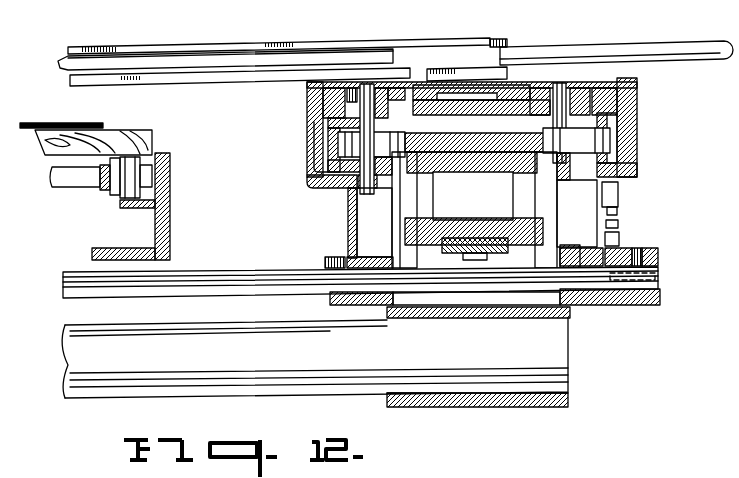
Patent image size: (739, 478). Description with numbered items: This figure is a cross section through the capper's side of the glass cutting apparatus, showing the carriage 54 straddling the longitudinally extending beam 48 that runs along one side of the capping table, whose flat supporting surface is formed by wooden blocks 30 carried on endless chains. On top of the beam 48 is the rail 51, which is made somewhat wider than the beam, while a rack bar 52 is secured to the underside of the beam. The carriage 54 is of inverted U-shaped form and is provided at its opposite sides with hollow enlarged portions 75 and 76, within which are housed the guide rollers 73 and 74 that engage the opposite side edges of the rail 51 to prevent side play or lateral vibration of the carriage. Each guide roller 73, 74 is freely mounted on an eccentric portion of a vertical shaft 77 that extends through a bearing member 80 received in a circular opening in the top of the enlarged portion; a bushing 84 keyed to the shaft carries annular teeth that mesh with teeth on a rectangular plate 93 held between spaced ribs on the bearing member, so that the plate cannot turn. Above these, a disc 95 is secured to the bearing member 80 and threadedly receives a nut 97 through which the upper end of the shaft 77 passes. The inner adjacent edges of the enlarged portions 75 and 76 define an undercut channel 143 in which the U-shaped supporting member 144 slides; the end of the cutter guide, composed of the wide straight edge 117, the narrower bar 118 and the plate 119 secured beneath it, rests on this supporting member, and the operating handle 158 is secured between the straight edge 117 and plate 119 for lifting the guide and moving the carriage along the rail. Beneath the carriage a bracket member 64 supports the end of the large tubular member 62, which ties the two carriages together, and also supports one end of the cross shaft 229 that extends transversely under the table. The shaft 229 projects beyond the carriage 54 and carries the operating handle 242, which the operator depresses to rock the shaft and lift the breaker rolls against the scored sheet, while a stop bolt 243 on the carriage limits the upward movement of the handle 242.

The wooden block 30 is at (135, 130).
The longitudinally extending beam 48 is at (472, 160).
The rail 51 is at (500, 136).
The rack bar 52 is at (455, 246).
The carriage 54 is at (348, 198).
The tubular member 62 is at (208, 306).
The bracket member 64 is at (577, 298).
The guide roller 73 is at (343, 143).
The guide roller 74 is at (600, 140).
The hollow enlarged portion 75 is at (322, 120).
The hollow enlarged portion 76 is at (637, 97).
The vertical shaft 77 is at (573, 82).
The bearing member 80 is at (637, 160).
The bushing 84 is at (343, 127).
The rectangular plate 93 is at (352, 88).
The disc 95 is at (540, 82).
The nut 97 is at (558, 84).
The straight edge 117 is at (166, 44).
The bar 118 is at (243, 33).
The plate 119 is at (198, 80).
The undercut groove 143 is at (467, 98).
The supporting member 144 is at (475, 80).
The operating handle 158 is at (700, 55).
The cross shaft 229 is at (235, 256).
The operating handle 242 is at (655, 254).
The stop bolt 243 is at (620, 216).